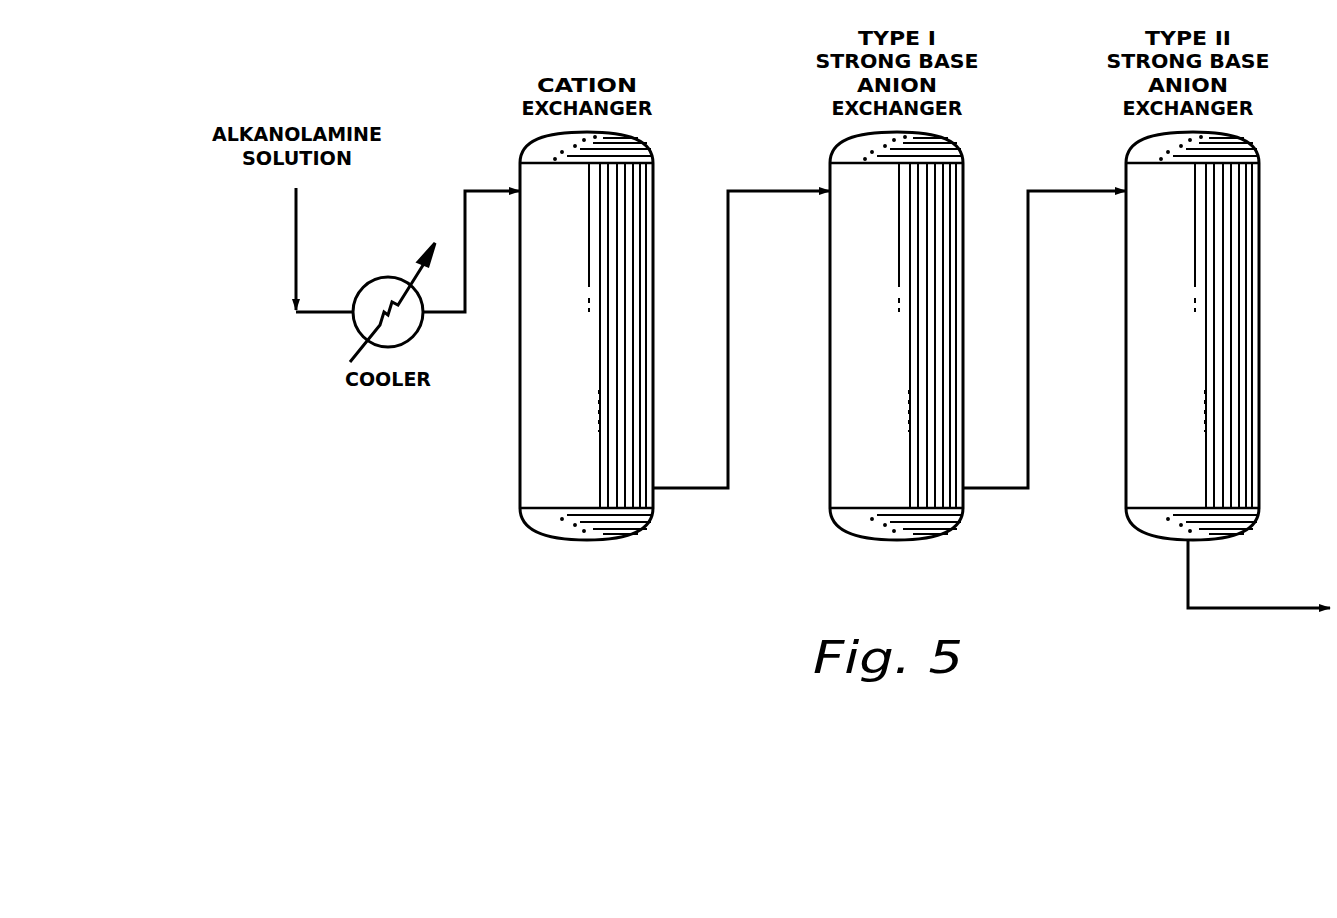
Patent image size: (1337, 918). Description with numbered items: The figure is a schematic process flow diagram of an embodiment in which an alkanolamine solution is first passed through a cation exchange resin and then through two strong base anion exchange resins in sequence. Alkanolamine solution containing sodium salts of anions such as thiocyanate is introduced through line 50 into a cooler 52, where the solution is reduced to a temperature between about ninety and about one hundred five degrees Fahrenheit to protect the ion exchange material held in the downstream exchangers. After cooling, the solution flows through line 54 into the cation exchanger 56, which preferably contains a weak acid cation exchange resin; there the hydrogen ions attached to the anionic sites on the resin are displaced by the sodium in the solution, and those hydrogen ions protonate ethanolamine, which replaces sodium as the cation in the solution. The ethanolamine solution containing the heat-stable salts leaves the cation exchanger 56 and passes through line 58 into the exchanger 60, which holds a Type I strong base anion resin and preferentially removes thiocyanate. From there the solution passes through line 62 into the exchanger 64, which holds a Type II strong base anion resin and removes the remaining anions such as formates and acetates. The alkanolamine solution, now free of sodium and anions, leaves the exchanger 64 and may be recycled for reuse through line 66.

The line 50 is at (292, 226).
The cooler 52 is at (386, 276).
The line 54 is at (460, 203).
The cation exchanger 56 is at (590, 491).
The line 58 is at (727, 292).
The exchanger 60 is at (904, 491).
The line 62 is at (1030, 292).
The exchanger 64 is at (1202, 491).
The line 66 is at (1254, 607).